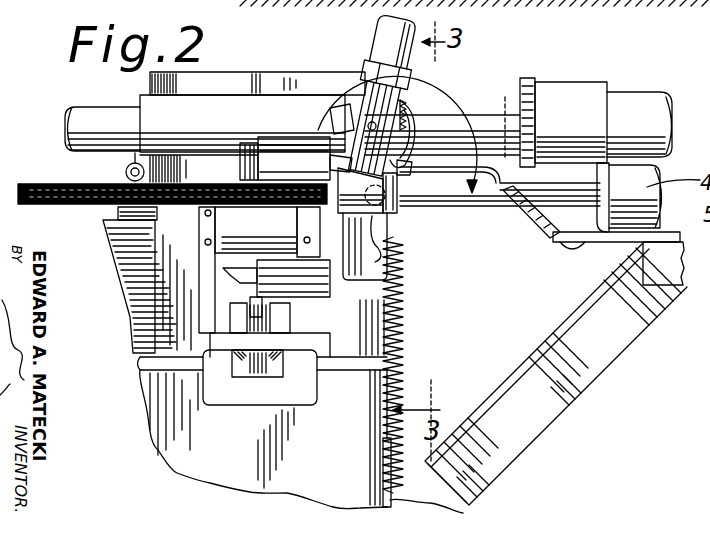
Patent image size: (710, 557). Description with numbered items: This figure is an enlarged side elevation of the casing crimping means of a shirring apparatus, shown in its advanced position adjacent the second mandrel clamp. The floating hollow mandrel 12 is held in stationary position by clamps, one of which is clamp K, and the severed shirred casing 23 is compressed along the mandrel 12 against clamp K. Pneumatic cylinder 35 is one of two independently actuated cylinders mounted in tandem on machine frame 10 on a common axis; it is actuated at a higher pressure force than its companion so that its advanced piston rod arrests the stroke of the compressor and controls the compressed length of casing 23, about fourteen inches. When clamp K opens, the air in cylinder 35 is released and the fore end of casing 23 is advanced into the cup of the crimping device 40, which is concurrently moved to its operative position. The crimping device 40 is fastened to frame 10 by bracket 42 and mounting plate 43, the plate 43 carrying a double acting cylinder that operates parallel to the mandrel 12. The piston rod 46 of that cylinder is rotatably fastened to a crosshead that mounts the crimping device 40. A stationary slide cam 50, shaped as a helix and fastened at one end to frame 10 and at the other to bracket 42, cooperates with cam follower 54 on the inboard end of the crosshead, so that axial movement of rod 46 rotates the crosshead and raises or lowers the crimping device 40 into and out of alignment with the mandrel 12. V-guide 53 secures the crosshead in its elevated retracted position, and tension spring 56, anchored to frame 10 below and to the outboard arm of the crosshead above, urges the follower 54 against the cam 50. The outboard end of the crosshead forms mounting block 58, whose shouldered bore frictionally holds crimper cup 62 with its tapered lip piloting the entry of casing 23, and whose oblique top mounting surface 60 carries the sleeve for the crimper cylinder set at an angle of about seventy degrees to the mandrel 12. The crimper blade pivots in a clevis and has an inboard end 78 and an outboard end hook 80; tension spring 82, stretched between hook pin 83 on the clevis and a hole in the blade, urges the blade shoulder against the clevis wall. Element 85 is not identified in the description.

The machine frame 10 is at (206, 391).
The floating hollow mandrel 12 is at (26, 182).
The severed shirred casing 23 is at (83, 182).
The pneumatic cylinder 35 is at (268, 108).
The crimping device 40 is at (352, 96).
The bracket 42 is at (600, 393).
The mounting plate 43 is at (617, 243).
The piston rod 46 is at (483, 193).
The slide cam 50 is at (533, 223).
The V-guide 53 is at (573, 232).
The cam follower 54 is at (404, 200).
The tension spring 56 is at (412, 383).
The mounting block 58 is at (388, 216).
The oblique top mounting surface 60 is at (330, 168).
The crimper cup 62 is at (335, 203).
The inboard end of crimper blade 78 is at (343, 92).
The outboard end hook 80 is at (518, 122).
The tension spring 82 is at (405, 116).
The hook pin 83 is at (410, 97).
The pad 85 is at (343, 150).
The clamp K is at (245, 114).